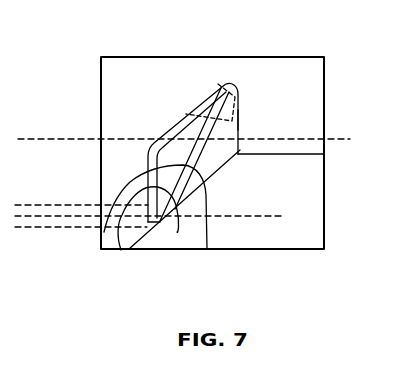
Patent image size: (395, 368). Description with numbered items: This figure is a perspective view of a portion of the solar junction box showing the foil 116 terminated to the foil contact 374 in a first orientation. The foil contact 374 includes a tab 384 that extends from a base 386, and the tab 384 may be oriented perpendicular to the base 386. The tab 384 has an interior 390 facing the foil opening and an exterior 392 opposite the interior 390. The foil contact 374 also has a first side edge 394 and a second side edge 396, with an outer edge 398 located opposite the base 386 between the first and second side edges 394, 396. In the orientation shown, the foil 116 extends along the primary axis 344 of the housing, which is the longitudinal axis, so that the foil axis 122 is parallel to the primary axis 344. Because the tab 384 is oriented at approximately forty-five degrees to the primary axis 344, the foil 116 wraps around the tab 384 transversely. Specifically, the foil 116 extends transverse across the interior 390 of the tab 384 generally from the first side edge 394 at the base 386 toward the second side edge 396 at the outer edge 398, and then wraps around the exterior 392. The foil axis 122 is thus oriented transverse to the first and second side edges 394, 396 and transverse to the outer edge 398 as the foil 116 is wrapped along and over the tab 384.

The foil 116 is at (207, 249).
The foil axis 122 is at (42, 226).
The primary axis 344 is at (63, 139).
The foil contact 374 is at (223, 148).
The tab 384 is at (240, 122).
The base 386 is at (273, 85).
The interior 390 is at (178, 213).
The exterior 392 is at (104, 232).
The first side edge 394 is at (121, 250).
The second side edge 396 is at (239, 100).
The outer edge 398 is at (216, 78).